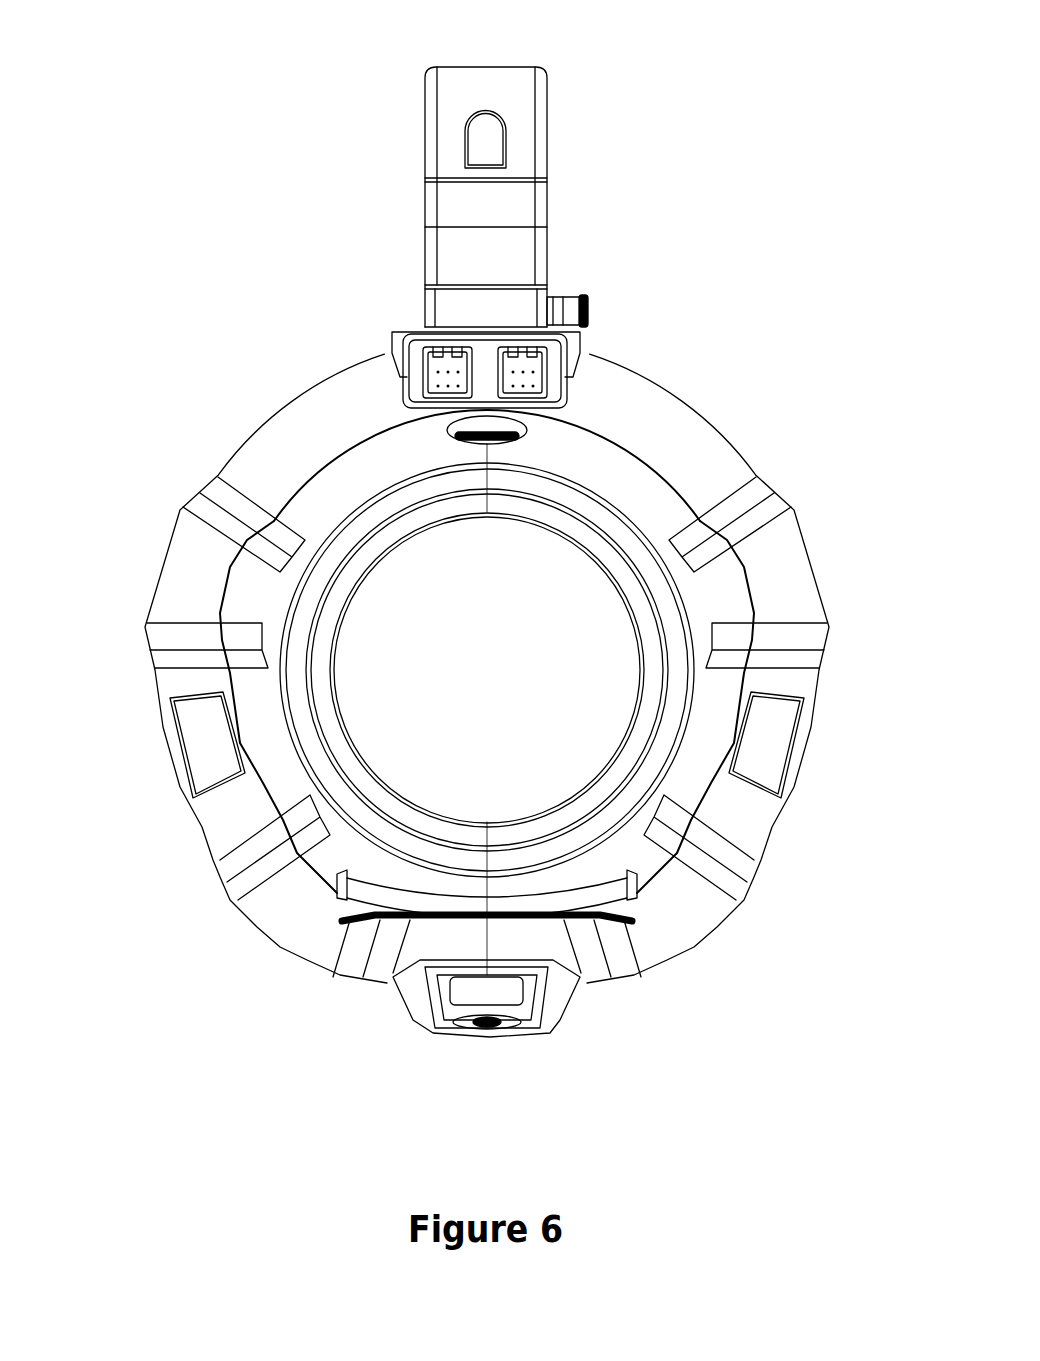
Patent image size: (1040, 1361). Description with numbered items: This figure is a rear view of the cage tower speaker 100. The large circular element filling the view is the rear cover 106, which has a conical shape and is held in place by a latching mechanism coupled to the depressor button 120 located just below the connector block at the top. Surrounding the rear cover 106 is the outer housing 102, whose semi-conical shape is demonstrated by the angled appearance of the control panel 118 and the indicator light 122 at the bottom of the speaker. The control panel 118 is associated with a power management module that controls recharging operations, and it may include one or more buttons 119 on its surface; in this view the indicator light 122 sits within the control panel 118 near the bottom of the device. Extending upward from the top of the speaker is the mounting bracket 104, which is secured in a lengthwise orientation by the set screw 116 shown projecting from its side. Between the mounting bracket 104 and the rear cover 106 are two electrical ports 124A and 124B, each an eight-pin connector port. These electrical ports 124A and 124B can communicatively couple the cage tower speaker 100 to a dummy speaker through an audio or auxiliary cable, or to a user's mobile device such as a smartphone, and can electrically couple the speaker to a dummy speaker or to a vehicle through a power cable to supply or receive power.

The cage tower speaker 100 is at (105, 78).
The outer housing 102 is at (810, 647).
The mounting bracket 104 is at (530, 123).
The rear cover 106 is at (720, 580).
The set screw 116 is at (582, 305).
The control panel 118 is at (530, 1012).
The buttons 119 is at (502, 998).
The depressor button 120 is at (503, 430).
The indicator light 122 is at (487, 1022).
The electrical port 124A is at (442, 373).
The electrical port 124B is at (527, 360).